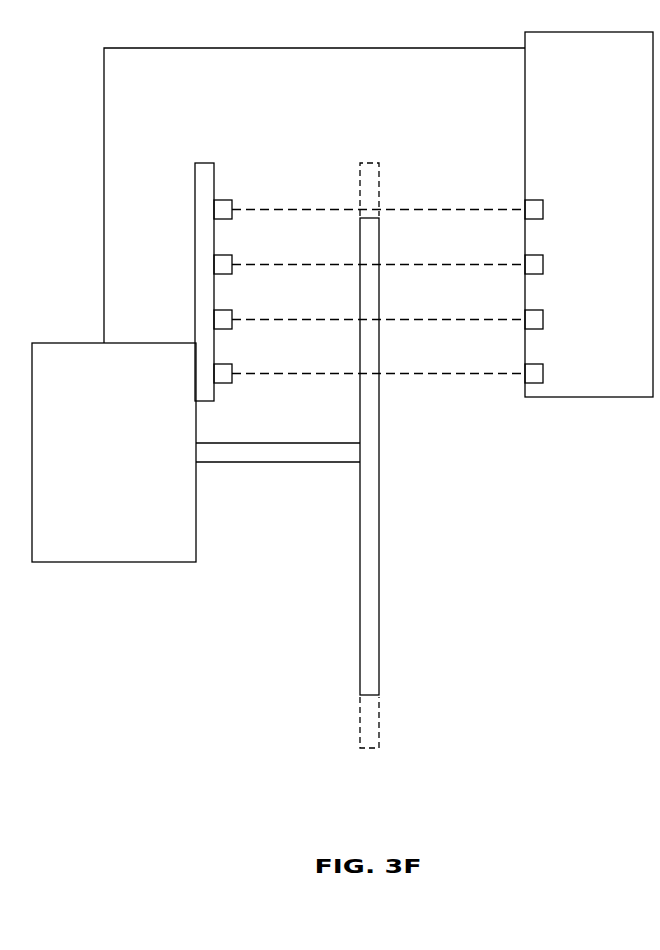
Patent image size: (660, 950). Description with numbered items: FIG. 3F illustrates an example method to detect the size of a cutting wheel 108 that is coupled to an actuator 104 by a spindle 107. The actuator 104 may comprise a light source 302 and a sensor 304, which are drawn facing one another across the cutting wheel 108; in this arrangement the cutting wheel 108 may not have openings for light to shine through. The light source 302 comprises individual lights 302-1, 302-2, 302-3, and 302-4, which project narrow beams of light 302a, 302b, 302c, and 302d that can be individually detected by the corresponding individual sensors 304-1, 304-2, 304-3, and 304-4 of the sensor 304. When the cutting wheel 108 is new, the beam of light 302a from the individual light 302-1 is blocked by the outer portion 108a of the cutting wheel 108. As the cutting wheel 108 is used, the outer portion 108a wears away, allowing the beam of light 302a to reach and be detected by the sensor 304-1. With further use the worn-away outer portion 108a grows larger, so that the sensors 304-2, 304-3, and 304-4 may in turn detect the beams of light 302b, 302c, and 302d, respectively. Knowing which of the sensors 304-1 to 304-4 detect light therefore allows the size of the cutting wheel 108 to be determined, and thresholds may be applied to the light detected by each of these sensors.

The actuator 104 is at (95, 477).
The spindle 107 is at (268, 468).
The cutting wheel 108 is at (449, 429).
The outer portion 108a is at (342, 730).
The light source 302 is at (188, 253).
The individual light 302-1 is at (252, 197).
The individual light 302-2 is at (252, 253).
The individual light 302-3 is at (252, 308).
The individual light 302-4 is at (252, 362).
The beam of light 302a is at (378, 195).
The beam of light 302b is at (378, 250).
The beam of light 302c is at (378, 303).
The beam of light 302d is at (378, 357).
The sensor 304 is at (569, 109).
The individual sensor 304-1 is at (568, 210).
The individual sensor 304-2 is at (568, 265).
The individual sensor 304-3 is at (568, 320).
The individual sensor 304-4 is at (568, 374).